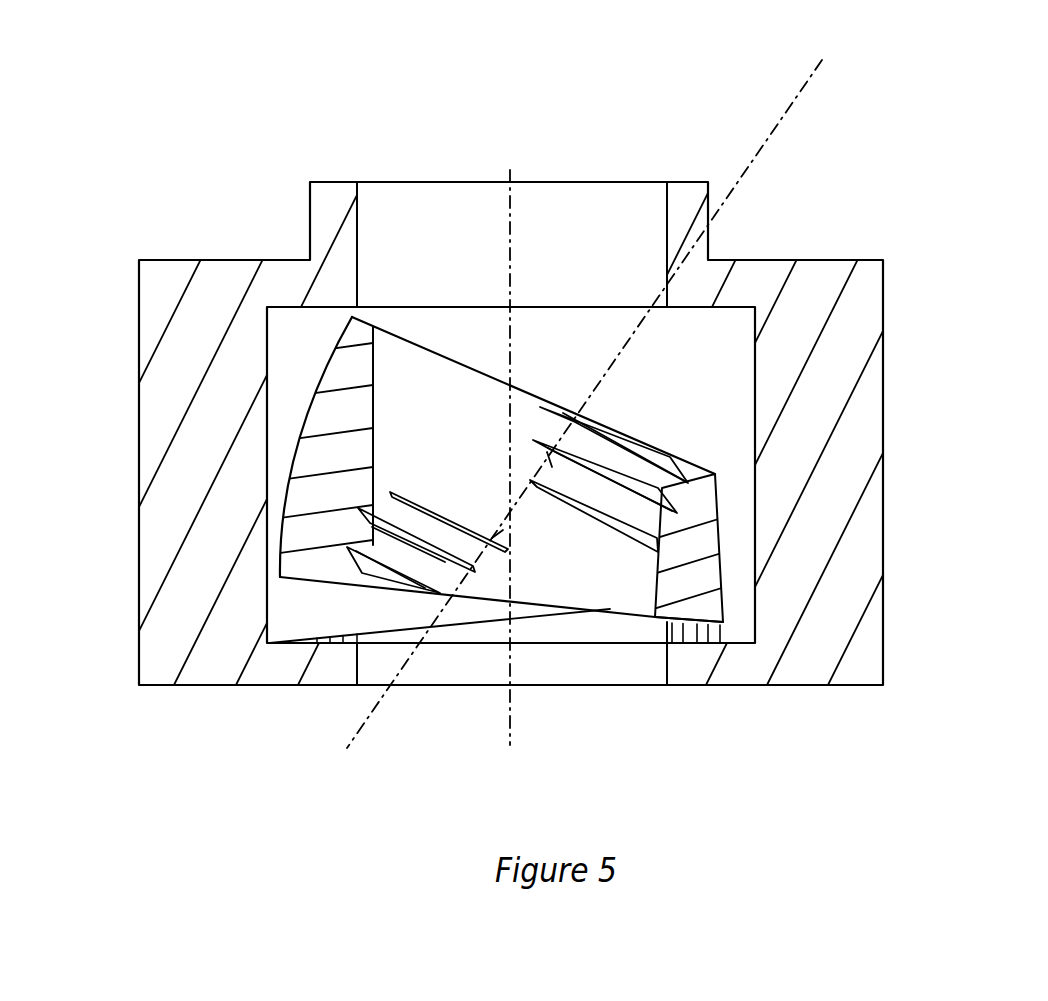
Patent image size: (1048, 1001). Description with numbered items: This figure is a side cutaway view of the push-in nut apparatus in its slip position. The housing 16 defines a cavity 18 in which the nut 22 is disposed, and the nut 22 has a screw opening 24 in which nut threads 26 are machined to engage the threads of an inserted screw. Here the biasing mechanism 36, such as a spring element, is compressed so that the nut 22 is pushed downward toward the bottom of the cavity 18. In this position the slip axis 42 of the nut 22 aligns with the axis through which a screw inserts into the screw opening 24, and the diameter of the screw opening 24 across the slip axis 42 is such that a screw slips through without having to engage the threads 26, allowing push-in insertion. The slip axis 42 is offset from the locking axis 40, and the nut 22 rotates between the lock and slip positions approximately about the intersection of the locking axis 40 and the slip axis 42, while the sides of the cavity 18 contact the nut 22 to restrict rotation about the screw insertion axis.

The housing 16 is at (178, 700).
The cavity 18 is at (303, 635).
The nut 22 is at (371, 599).
The screw opening 24 is at (416, 392).
The nut threads 26 is at (488, 570).
The biasing mechanism 36 is at (738, 633).
The locking axis 40 is at (803, 117).
The slip axis 42 is at (510, 155).